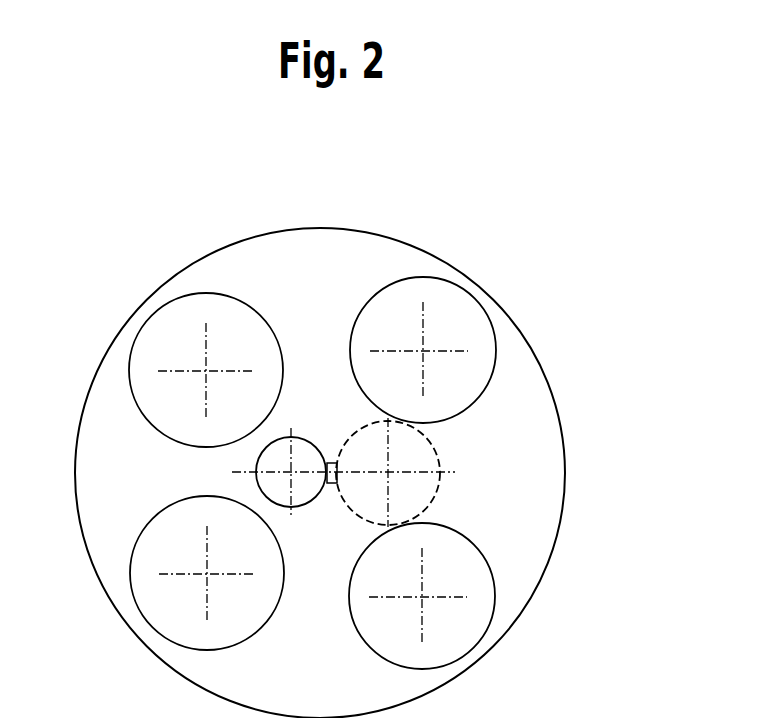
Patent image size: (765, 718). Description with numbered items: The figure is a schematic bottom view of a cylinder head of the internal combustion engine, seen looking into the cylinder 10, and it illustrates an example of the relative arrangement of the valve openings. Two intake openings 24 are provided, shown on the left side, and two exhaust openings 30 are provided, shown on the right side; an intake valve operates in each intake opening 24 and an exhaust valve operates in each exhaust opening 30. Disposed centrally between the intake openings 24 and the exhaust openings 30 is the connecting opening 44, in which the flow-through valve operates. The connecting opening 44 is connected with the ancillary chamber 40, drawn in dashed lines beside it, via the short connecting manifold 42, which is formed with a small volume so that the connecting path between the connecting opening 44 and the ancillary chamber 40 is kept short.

The cylinder 10 is at (560, 400).
The intake opening 24 is at (158, 337).
The exhaust opening 30 is at (460, 312).
The ancillary chamber 40 is at (437, 460).
The connecting manifold 42 is at (330, 462).
The connecting opening 44 is at (302, 487).